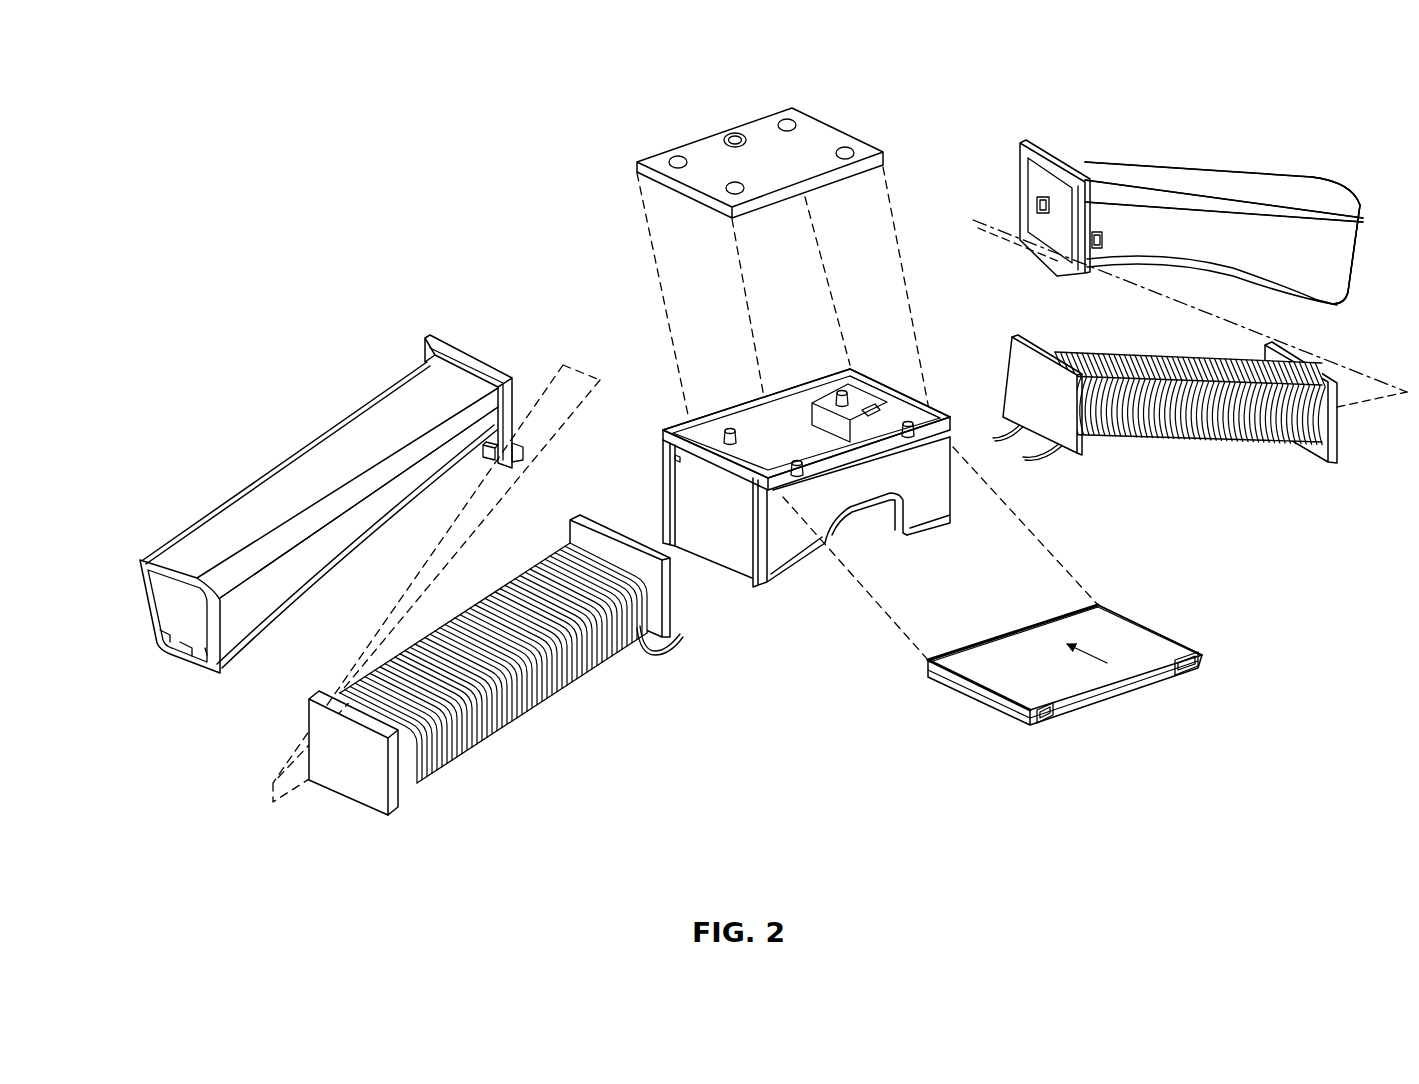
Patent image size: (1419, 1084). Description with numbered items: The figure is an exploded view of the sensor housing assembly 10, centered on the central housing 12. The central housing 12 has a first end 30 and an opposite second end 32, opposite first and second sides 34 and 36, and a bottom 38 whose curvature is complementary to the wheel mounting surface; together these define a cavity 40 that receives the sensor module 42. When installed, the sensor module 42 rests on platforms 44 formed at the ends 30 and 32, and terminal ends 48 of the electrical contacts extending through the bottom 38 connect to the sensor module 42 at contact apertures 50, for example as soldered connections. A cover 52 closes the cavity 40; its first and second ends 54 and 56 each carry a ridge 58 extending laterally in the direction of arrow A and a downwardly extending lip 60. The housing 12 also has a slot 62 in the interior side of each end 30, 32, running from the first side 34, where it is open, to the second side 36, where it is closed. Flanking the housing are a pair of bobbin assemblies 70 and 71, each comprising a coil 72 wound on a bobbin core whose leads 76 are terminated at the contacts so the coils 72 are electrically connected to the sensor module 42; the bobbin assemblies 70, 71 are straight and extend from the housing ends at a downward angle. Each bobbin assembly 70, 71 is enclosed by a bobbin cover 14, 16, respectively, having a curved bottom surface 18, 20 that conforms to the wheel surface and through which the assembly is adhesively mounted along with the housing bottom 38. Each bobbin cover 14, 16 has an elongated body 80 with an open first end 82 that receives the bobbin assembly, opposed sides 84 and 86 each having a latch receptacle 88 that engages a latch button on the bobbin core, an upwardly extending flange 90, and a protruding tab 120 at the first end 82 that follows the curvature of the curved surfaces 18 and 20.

The sensor housing assembly 10 is at (410, 112).
The central housing 12 is at (926, 543).
The bobbin cover 14 is at (350, 380).
The bobbin cover 16 is at (1256, 146).
The curved bottom surface 18 is at (332, 588).
The curved bottom surface 20 is at (1319, 300).
The first end 30 is at (680, 490).
The second end 32 is at (836, 375).
The first side 34 is at (786, 566).
The second side 36 is at (802, 392).
The bottom 38 is at (951, 522).
The cavity 40 is at (757, 405).
The sensor module 42 is at (818, 125).
The platforms 44 is at (684, 420).
The terminal ends 48 is at (728, 430).
The contact apertures 50 is at (782, 118).
The cover 52 is at (1124, 598).
The first end 54 is at (1171, 637).
The second end 56 is at (976, 677).
The ridge 58 is at (1195, 691).
The lip 60 is at (1216, 661).
The slot 62 is at (831, 540).
The bobbin assembly 70 is at (468, 773).
The bobbin assembly 71 is at (1180, 454).
The coil 72 is at (510, 705).
The leads 76 is at (667, 660).
The elongated body 80 is at (213, 497).
The first end 82 is at (470, 338).
The side 84 is at (298, 592).
The side 86 is at (174, 540).
The latch receptacle 88 is at (489, 462).
The flange 90 is at (483, 360).
The tab 120 is at (517, 447).